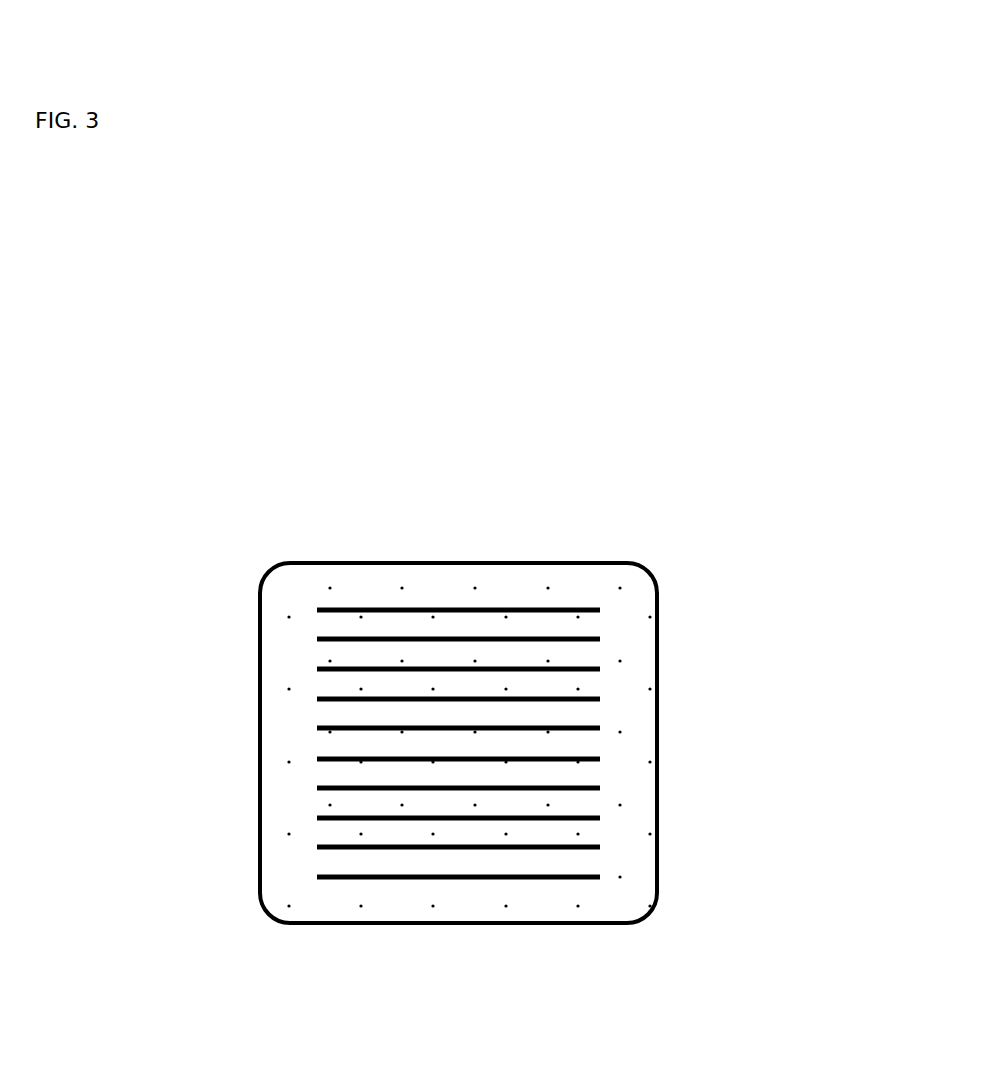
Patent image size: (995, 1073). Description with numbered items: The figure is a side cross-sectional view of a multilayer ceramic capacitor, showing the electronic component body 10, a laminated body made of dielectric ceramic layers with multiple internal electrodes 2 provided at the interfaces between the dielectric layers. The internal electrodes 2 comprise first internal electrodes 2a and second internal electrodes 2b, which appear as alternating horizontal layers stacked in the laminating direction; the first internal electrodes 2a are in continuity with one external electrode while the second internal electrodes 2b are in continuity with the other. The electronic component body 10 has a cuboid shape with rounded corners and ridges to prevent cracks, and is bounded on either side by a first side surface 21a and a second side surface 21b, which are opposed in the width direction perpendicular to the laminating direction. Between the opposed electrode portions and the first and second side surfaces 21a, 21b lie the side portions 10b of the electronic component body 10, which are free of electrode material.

The electronic component body 10 is at (456, 679).
The side portions 10b is at (293, 742).
The first side surface 21a is at (260, 635).
The second side surface 21b is at (657, 643).
The internal electrodes 2 is at (470, 833).
The first internal electrodes 2a is at (440, 821).
The second internal electrodes 2b is at (527, 788).